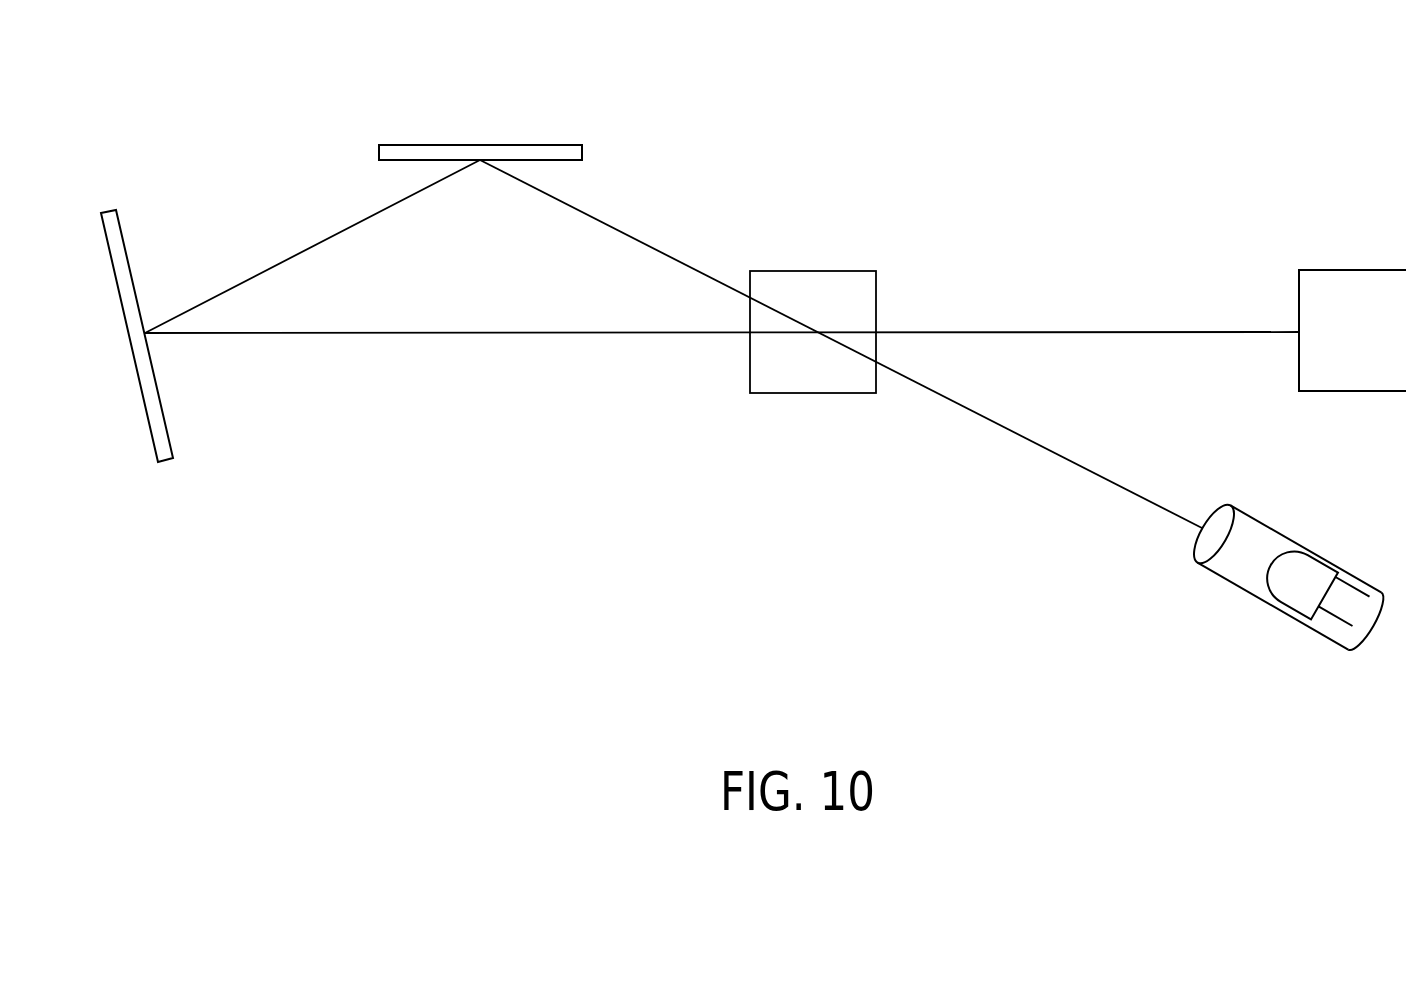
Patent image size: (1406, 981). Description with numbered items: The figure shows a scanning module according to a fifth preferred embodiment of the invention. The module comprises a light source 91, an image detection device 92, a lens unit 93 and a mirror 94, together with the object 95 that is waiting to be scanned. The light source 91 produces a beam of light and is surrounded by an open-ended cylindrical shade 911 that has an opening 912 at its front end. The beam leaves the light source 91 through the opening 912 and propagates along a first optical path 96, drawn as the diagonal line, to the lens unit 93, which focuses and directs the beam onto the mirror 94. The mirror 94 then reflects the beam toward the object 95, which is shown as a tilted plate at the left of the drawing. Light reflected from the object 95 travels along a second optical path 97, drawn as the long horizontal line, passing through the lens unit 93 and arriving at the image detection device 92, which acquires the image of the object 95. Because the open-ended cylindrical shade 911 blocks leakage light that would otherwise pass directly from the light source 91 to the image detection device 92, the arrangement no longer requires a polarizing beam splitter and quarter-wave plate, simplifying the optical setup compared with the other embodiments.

The light source 91 is at (1303, 578).
The open-ended cylindrical shade 911 is at (1262, 522).
The opening 912 is at (1200, 546).
The image detection device 92 is at (1355, 270).
The lens unit 93 is at (876, 271).
The mirror 94 is at (557, 145).
The object 95 is at (129, 263).
The first optical path 96 is at (968, 410).
The second optical path 97 is at (447, 333).